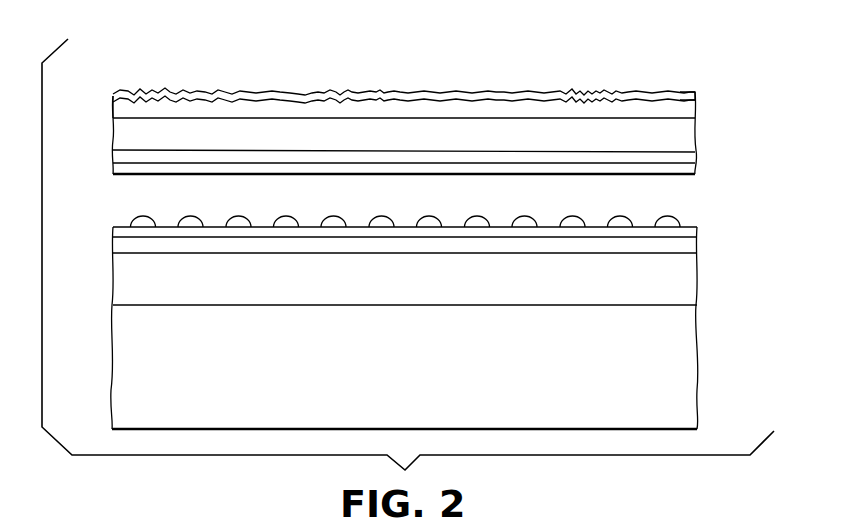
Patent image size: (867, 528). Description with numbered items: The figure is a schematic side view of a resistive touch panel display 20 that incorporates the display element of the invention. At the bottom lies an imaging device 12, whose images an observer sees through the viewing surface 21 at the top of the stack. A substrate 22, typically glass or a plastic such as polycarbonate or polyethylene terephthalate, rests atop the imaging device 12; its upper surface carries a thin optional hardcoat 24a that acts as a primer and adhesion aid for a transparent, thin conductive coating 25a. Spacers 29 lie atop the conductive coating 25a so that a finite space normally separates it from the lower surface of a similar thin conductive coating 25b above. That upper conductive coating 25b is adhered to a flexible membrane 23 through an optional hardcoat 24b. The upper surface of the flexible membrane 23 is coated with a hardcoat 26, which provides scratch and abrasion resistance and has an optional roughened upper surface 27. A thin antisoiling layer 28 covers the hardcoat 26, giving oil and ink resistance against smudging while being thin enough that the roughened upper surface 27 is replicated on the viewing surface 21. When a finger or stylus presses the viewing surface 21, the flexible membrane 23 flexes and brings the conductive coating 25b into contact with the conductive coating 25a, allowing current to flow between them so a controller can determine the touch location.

The imaging device 12 is at (685, 370).
The resistive touch panel display 20 is at (614, 63).
The viewing surface 21 is at (203, 91).
The substrate 22 is at (683, 283).
The flexible membrane 23 is at (686, 137).
The hardcoat 24a is at (690, 247).
The hardcoat 24b is at (690, 155).
The conductive coating 25a is at (697, 232).
The conductive coating 25b is at (695, 174).
The hardcoat 26 is at (688, 109).
The roughened upper surface 27 is at (113, 107).
The antisoiling layer 28 is at (696, 96).
The spacers 29 is at (667, 215).